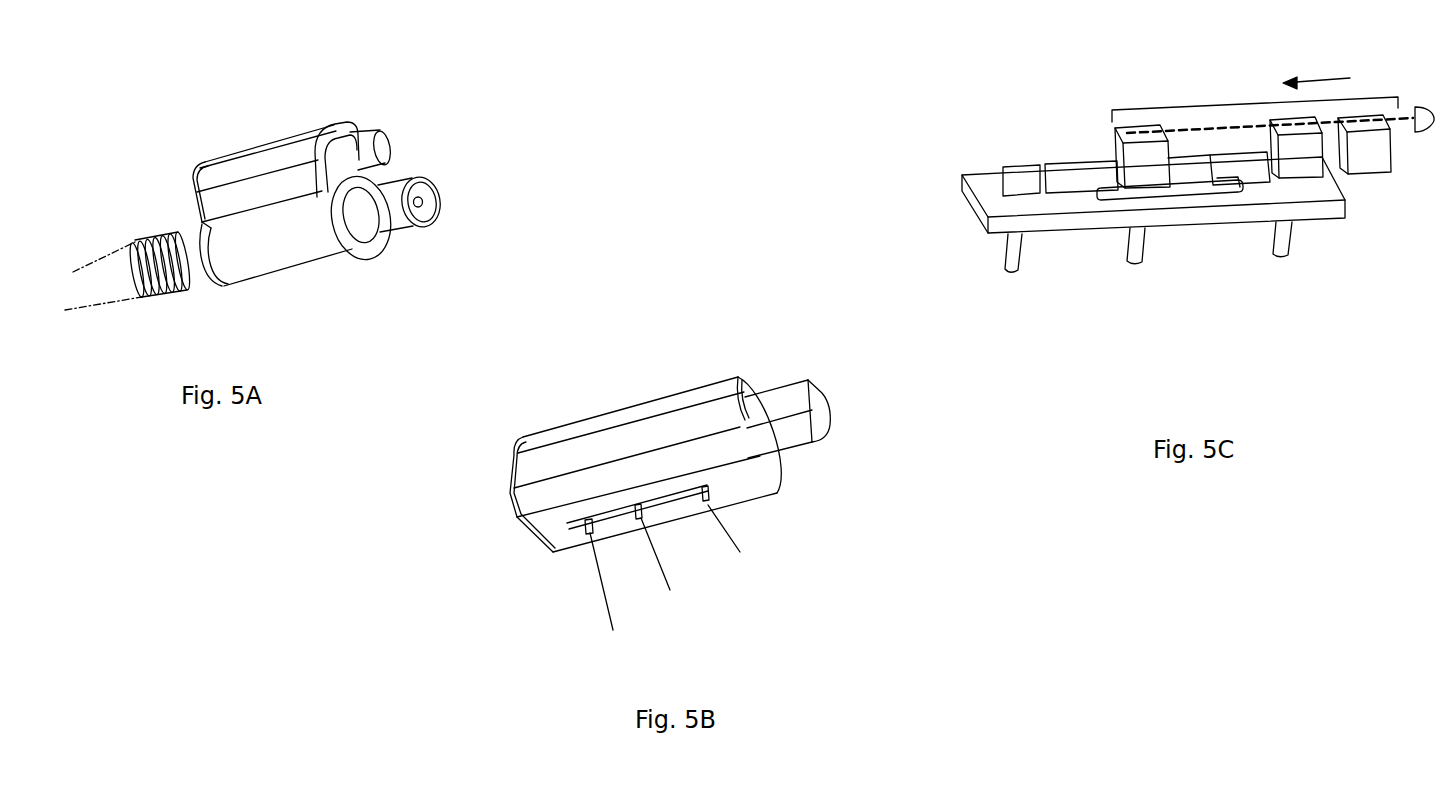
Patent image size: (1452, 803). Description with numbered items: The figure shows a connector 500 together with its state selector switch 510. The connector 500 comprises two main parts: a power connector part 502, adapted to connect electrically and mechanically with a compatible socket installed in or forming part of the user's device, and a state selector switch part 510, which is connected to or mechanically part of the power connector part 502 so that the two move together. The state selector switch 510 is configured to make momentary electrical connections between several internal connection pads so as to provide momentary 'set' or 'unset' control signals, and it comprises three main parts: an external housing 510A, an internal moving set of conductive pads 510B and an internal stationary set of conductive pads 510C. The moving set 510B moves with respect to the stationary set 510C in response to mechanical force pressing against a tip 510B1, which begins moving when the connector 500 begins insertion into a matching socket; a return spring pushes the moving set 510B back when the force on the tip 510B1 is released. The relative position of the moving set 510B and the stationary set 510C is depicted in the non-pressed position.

In FIG. 5A, the connector 500 is at (337, 312).
In FIG. 5A, the power connector part 502 is at (254, 257).
In FIG. 5A, the state selector switch 510 is at (260, 148).
In FIG. 5B, the external housing 510A is at (645, 427).
In FIG. 5B, the internal moving set of conductive pads 510B is at (797, 447).
In FIG. 5C, the internal moving set of conductive pads 510B is at (1258, 104).
In FIG. 5B, the tip 510B1 is at (820, 410).
In FIG. 5C, the tip 510B1 is at (1432, 131).
In FIG. 5B, the internal stationary set of conductive pads 510C is at (547, 561).
In FIG. 5C, the internal stationary set of conductive pads 510C is at (978, 213).